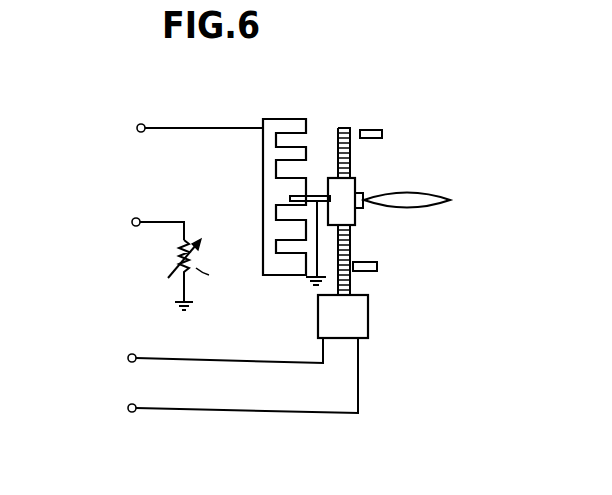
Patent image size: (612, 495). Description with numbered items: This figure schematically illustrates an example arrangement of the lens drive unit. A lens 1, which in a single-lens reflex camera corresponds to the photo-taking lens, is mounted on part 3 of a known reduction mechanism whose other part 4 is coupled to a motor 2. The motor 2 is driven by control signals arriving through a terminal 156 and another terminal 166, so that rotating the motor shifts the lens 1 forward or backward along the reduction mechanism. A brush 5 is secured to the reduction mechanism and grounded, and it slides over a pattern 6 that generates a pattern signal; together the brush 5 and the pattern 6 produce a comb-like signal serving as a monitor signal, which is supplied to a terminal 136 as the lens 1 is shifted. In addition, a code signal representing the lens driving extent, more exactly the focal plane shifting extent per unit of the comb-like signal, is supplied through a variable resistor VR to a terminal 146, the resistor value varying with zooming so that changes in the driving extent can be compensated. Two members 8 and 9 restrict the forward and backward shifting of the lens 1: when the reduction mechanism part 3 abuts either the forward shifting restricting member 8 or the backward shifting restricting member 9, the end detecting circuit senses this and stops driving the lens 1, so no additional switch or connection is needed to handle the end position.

The lens 1 is at (402, 193).
The motor 2 is at (363, 320).
The reduction mechanism part 3 is at (344, 186).
The reduction mechanism part 4 is at (345, 127).
The brush 5 is at (311, 193).
The pattern 6 is at (290, 119).
The forward shifting restricting member 8 is at (367, 264).
The backward shifting restricting member 9 is at (372, 129).
The terminal T136 136 is at (181, 131).
The terminal T146 146 is at (163, 259).
The terminal T156 156 is at (207, 358).
The terminal T166 166 is at (225, 383).